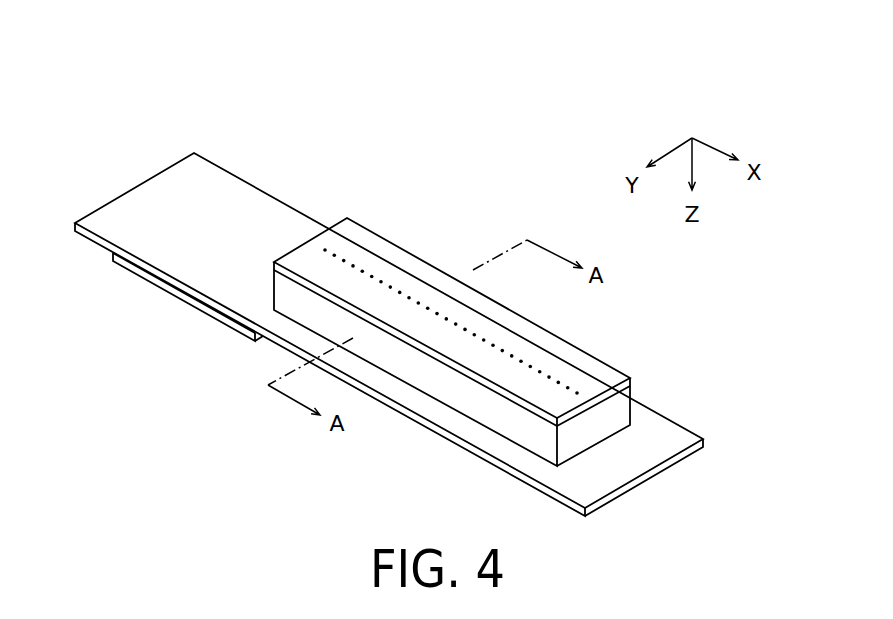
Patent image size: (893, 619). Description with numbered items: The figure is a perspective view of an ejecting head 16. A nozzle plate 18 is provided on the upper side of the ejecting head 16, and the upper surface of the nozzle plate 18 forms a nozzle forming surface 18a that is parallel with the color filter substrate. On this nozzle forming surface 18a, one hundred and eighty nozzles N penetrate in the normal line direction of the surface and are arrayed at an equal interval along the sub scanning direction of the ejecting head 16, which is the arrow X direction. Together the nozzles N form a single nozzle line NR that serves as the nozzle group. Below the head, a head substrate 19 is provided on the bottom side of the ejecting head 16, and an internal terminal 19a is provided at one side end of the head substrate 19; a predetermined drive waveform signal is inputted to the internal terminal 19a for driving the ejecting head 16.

The ejecting head 16 is at (112, 90).
The nozzle plate 18 is at (633, 379).
The nozzle forming surface 18a is at (605, 369).
The head substrate 19 is at (233, 192).
The internal terminal 19a is at (203, 306).
The nozzle N is at (437, 313).
The nozzle line NR is at (281, 237).